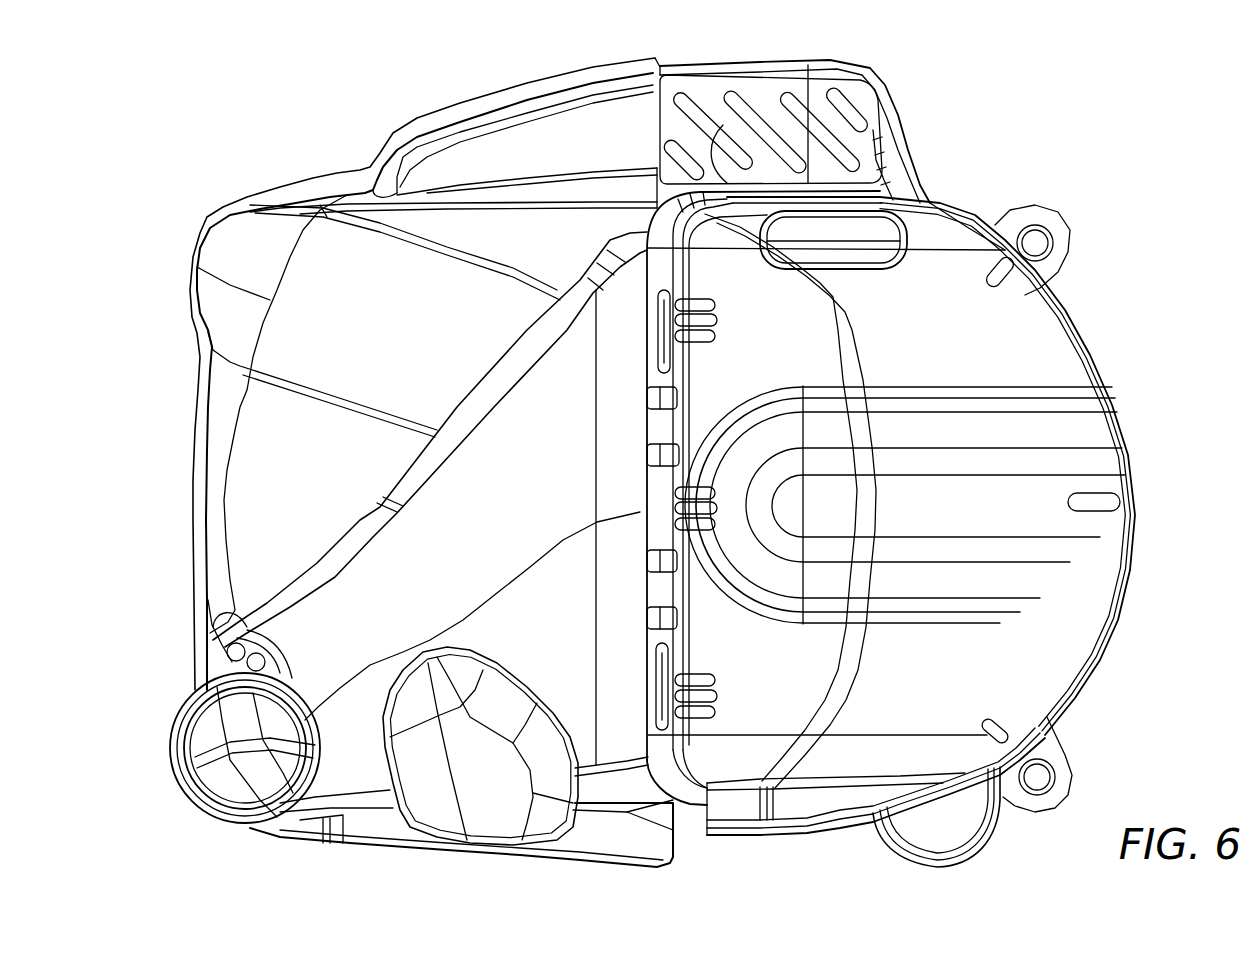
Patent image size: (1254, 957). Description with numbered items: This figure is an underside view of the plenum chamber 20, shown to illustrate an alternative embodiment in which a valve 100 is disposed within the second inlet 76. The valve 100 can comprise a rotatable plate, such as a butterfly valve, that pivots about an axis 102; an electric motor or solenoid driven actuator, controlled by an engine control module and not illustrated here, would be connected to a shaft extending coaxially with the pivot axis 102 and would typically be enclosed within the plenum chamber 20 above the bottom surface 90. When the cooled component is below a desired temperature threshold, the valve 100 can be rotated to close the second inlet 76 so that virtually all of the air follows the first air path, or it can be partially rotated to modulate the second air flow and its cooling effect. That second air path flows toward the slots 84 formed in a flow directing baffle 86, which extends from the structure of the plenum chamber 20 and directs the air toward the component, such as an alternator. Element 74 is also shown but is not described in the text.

The plenum chamber 20 is at (707, 462).
The inlet tube 74 is at (237, 764).
The second inlet 76 is at (902, 273).
The slots 84 is at (776, 113).
The flow directing baffle 86 is at (832, 153).
The bottom surface 90 is at (1047, 663).
The valve 100 is at (893, 230).
The axis 102 is at (848, 243).